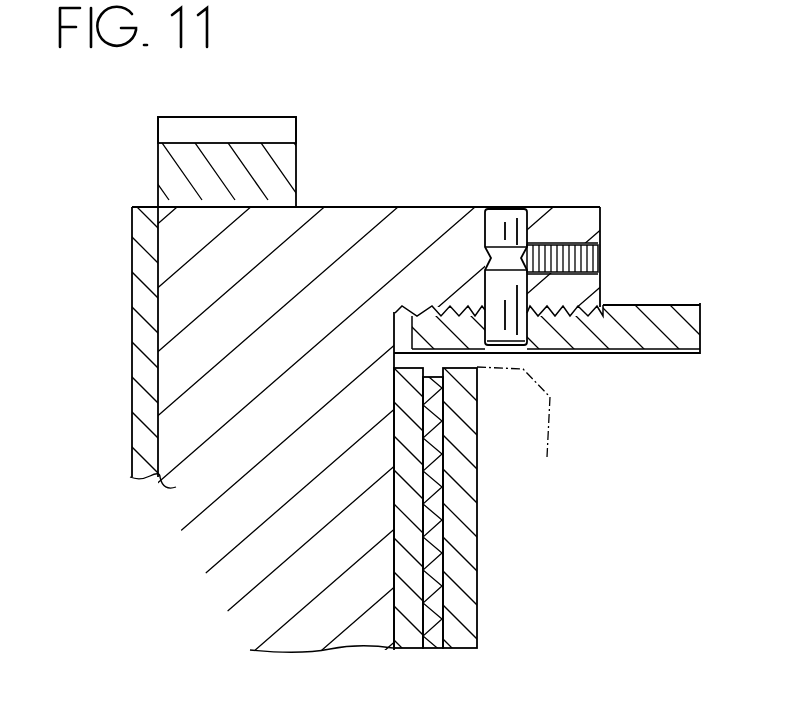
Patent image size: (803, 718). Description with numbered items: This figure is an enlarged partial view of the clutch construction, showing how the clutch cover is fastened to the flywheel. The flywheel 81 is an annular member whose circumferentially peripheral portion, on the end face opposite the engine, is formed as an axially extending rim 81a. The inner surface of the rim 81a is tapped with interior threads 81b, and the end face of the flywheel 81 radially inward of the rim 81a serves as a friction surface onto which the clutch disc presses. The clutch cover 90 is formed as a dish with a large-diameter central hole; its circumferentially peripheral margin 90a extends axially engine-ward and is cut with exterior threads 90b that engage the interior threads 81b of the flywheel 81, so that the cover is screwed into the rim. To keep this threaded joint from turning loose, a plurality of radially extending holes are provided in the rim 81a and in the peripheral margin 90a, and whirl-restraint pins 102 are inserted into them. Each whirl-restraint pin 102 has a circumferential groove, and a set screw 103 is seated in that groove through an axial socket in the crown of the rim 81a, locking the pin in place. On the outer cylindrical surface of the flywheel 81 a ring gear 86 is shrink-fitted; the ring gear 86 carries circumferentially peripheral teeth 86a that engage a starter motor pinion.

The flywheel 81 is at (178, 428).
The rim 81a is at (453, 210).
The interior threads 81b is at (450, 311).
The ring gear 86 is at (172, 178).
The circumferentially peripheral teeth 86a is at (165, 130).
The clutch cover 90 is at (692, 323).
The circumferentially peripheral margin 90a is at (548, 338).
The exterior threads 90b is at (553, 312).
The whirl-restraint pin 102 is at (512, 222).
The set screw 103 is at (590, 240).